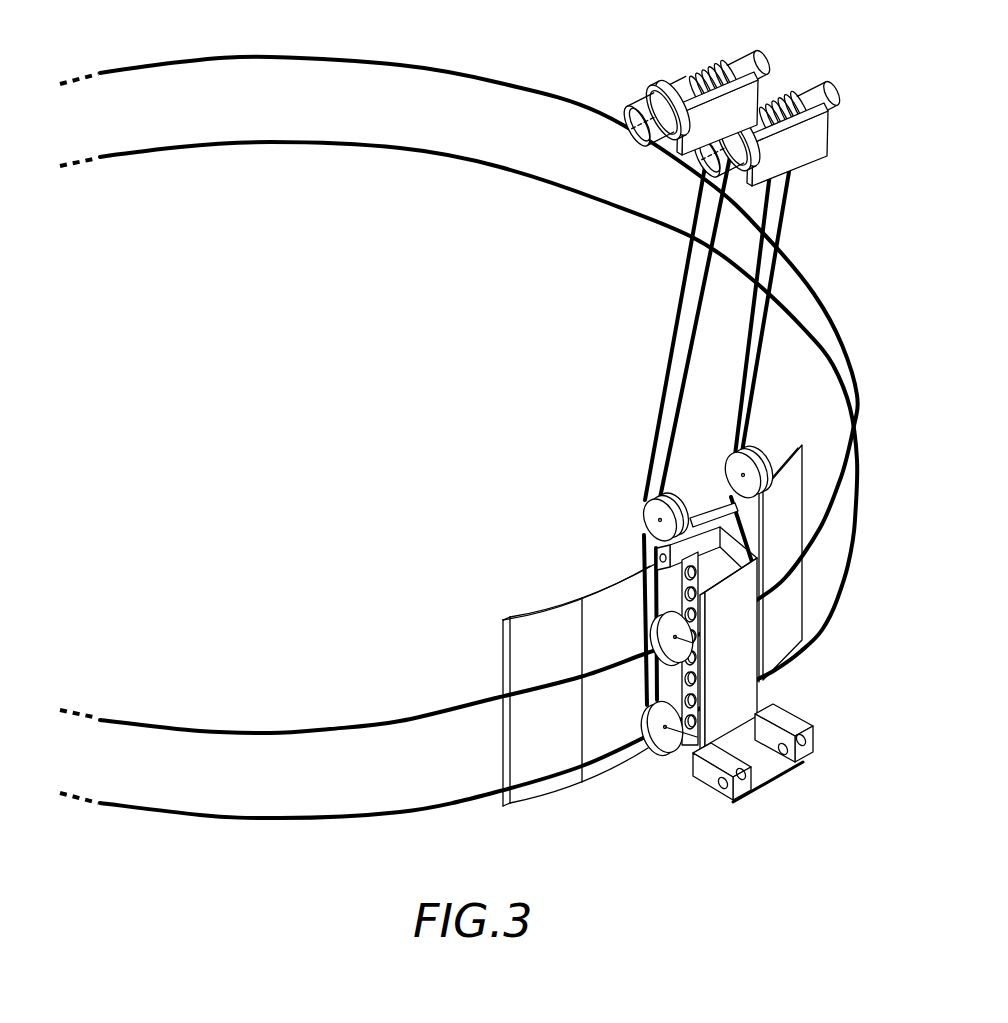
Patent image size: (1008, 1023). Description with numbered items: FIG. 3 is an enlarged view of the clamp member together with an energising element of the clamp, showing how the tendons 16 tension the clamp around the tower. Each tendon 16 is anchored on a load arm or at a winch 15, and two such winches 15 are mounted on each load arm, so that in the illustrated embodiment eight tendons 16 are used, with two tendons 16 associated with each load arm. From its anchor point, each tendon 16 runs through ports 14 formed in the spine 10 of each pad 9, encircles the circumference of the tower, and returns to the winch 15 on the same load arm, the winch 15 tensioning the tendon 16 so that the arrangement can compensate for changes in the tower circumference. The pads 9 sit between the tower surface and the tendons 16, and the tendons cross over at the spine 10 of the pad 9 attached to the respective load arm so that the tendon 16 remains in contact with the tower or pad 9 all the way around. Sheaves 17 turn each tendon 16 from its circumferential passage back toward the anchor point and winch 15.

The pad 9 is at (502, 645).
The spine 10 is at (759, 693).
The port 14 is at (683, 747).
The winch 15 is at (690, 84).
The tendon 16 is at (360, 143).
The sheave 17 is at (641, 512).